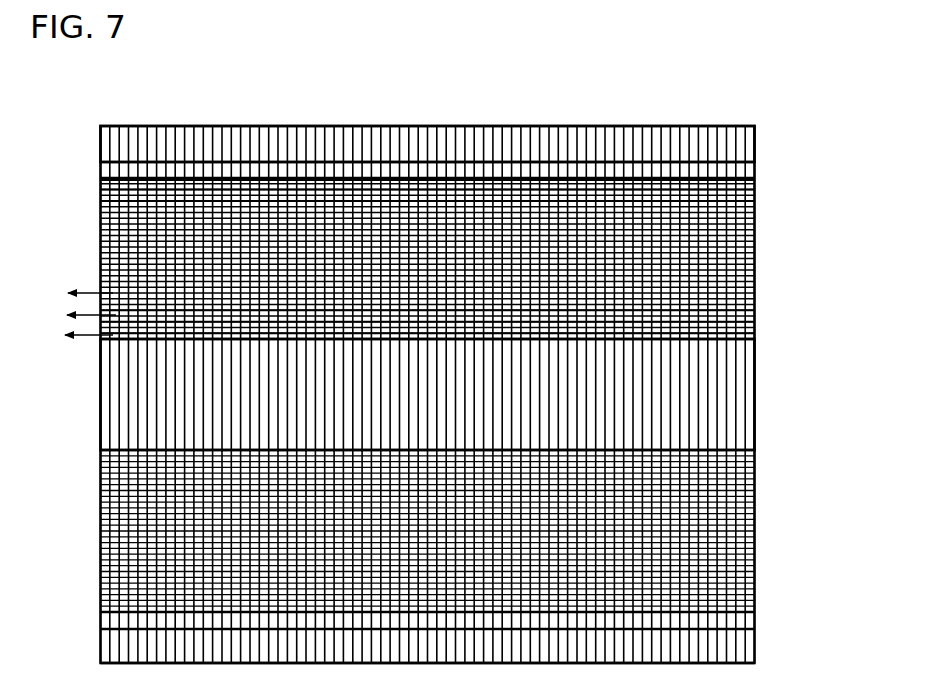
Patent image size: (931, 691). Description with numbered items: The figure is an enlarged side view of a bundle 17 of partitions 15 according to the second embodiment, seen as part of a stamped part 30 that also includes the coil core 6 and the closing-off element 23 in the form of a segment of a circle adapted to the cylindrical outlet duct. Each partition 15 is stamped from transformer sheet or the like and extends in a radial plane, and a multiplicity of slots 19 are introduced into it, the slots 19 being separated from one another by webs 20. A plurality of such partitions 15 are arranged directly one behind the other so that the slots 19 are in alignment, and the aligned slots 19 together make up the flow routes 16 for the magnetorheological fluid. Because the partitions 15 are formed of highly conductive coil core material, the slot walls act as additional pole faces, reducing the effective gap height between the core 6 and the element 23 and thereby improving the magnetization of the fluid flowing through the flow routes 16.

The part 30 is at (385, 105).
The partition 15 is at (253, 118).
The element in the form of a segment of a circle 23 is at (593, 123).
The bundle 17 is at (488, 178).
The core 6 is at (597, 357).
The webs 20 is at (741, 195).
The slots 19 is at (743, 322).
The flow routes 16 is at (55, 325).